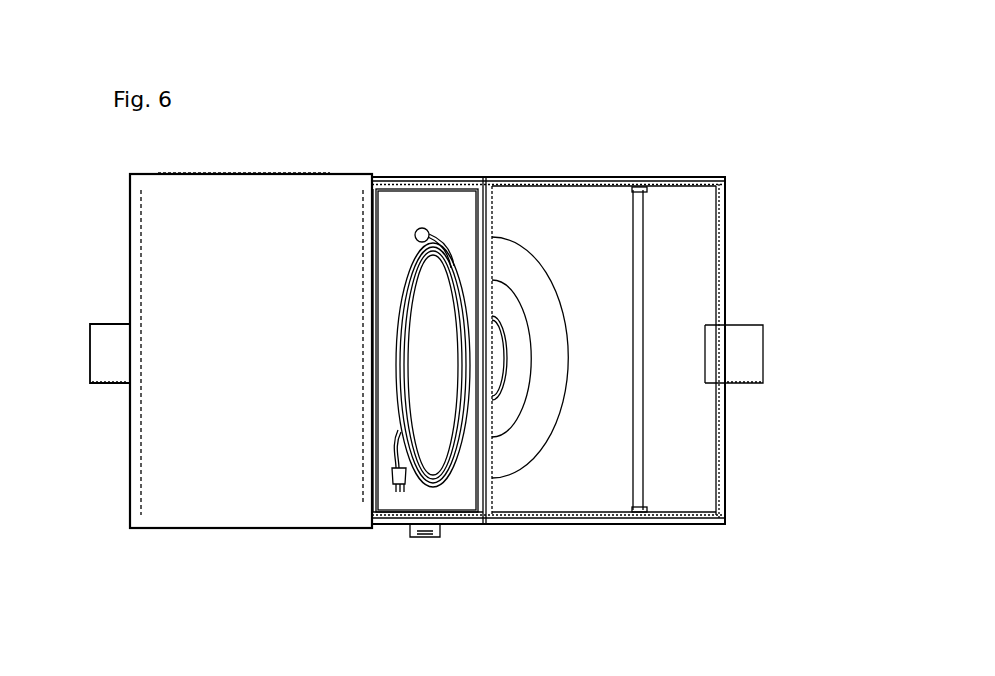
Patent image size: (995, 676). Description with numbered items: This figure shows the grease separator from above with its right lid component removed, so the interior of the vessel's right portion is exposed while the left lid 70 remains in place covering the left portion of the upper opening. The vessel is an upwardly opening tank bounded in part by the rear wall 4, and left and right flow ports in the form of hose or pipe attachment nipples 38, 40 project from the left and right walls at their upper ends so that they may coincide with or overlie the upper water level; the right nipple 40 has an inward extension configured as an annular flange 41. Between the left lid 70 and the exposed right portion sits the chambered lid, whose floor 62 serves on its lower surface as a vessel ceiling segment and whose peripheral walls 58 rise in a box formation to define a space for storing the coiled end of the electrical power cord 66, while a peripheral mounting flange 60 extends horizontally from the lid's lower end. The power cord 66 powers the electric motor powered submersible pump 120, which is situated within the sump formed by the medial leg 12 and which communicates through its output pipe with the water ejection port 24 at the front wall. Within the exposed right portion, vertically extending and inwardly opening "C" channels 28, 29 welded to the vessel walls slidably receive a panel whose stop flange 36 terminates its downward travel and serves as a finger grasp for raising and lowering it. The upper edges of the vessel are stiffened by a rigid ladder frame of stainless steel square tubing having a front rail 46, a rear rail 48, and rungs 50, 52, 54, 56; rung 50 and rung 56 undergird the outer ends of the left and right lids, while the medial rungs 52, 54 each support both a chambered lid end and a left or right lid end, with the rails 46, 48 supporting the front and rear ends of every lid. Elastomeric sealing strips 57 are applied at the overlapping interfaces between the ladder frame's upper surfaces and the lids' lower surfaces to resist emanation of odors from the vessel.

The rear wall 4 is at (521, 193).
The medial leg 12 is at (556, 324).
The water ejection port 24 is at (420, 540).
The "C" channel 28 is at (660, 510).
The "C" channel 29 is at (645, 190).
The stop flange 36 is at (636, 227).
The left hose or pipe attachment nipple 38 is at (105, 330).
The right hose or pipe attachment nipple 40 is at (743, 375).
The annular flange 41 is at (708, 337).
The front rail 46 is at (540, 522).
The rear rail 48 is at (543, 180).
The rung 50 is at (130, 255).
The rung 52 is at (362, 262).
The rung 54 is at (492, 215).
The rung 56 is at (713, 473).
The elastomeric sealing strip 57 is at (580, 178).
The peripheral walls 58 is at (393, 188).
The peripheral mounting flange 60 is at (418, 185).
The floor 62 is at (458, 215).
The electrical power cord 66 is at (447, 477).
The left lid 70 is at (192, 200).
The electric motor powered submersible pump 120 is at (507, 367).